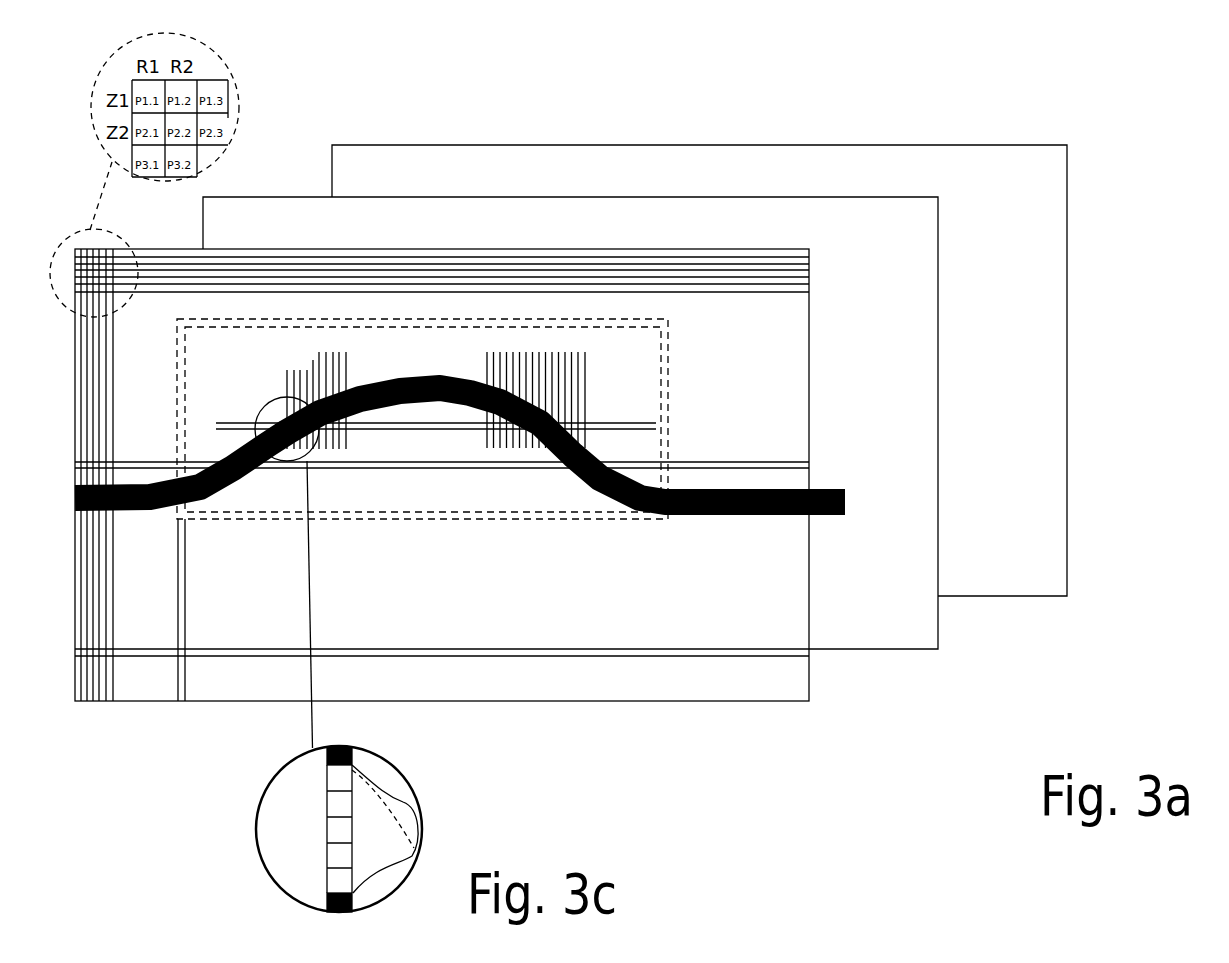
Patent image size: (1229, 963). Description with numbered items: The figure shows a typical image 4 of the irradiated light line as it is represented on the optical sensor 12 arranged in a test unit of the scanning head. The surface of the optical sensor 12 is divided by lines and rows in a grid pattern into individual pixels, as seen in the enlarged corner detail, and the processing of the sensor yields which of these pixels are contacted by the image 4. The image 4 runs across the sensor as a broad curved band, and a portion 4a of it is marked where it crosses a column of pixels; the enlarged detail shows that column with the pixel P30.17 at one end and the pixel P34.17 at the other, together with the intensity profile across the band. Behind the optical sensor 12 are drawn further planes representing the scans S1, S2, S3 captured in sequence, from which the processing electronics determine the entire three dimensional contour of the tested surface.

In FIG. 3A, the image 4 is at (602, 452).
In FIG. 3A, the track section 4a is at (397, 380).
In FIG. 3A, the optical sensor 12 is at (447, 506).
In FIG. 3A, the scan S1 is at (797, 687).
In FIG. 3A, the scan S2 is at (925, 635).
In FIG. 3A, the scan S3 is at (1053, 584).
In FIG. 3C, the pixel P30.17 is at (317, 820).
In FIG. 3C, the pixel P34.17 is at (317, 893).